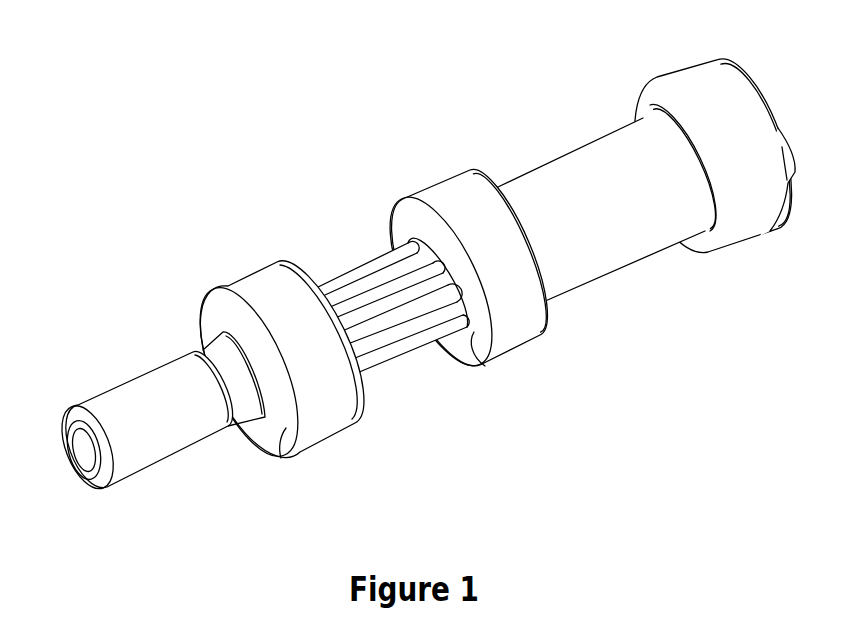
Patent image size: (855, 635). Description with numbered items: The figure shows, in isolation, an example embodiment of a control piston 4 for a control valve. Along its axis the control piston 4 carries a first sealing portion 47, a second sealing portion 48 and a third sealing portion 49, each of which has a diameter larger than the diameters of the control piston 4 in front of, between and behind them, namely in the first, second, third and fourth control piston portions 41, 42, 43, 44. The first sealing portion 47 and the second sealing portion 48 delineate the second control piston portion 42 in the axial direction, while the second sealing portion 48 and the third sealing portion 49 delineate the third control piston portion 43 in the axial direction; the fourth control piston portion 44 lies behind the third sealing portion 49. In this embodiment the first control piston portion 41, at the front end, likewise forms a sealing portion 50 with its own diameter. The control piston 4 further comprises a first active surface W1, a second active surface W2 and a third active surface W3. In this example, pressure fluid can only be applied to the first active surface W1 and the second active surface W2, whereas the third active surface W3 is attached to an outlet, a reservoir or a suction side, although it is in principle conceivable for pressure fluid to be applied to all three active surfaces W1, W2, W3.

The control piston 4 is at (533, 88).
The first control piston portion 41 is at (183, 443).
The second control piston portion 42 is at (418, 312).
The third control piston portion 43 is at (620, 245).
The fourth control piston portion 44 is at (773, 178).
The first sealing portion 47 is at (283, 275).
The second sealing portion 48 is at (440, 192).
The third sealing portion 49 is at (680, 78).
The sealing portion 50 is at (126, 404).
The first active surface W1 is at (75, 476).
The second active surface W2 is at (281, 460).
The third active surface W3 is at (485, 366).